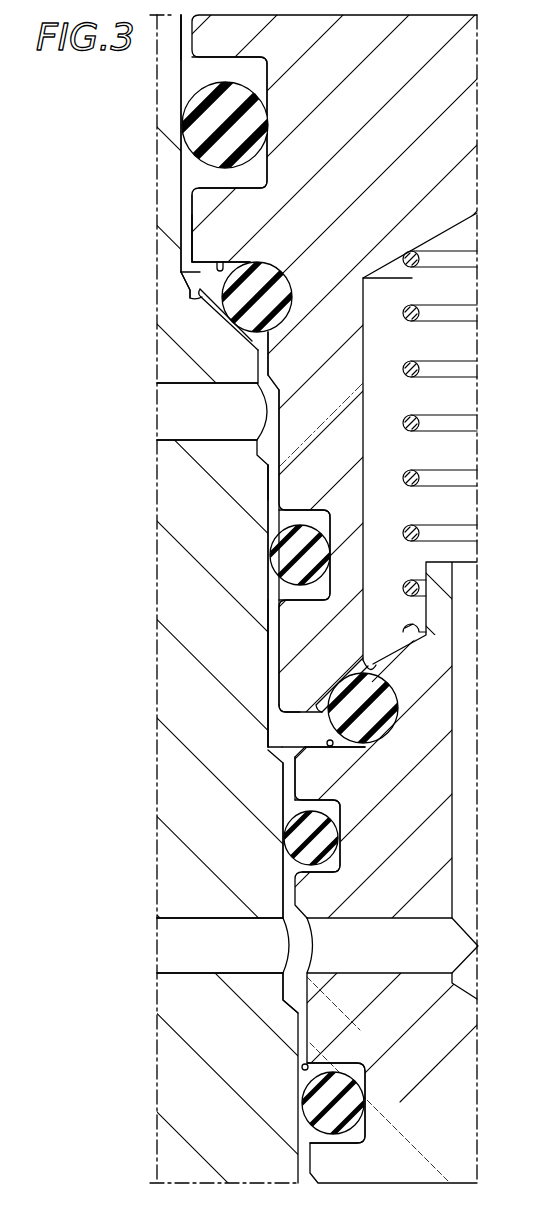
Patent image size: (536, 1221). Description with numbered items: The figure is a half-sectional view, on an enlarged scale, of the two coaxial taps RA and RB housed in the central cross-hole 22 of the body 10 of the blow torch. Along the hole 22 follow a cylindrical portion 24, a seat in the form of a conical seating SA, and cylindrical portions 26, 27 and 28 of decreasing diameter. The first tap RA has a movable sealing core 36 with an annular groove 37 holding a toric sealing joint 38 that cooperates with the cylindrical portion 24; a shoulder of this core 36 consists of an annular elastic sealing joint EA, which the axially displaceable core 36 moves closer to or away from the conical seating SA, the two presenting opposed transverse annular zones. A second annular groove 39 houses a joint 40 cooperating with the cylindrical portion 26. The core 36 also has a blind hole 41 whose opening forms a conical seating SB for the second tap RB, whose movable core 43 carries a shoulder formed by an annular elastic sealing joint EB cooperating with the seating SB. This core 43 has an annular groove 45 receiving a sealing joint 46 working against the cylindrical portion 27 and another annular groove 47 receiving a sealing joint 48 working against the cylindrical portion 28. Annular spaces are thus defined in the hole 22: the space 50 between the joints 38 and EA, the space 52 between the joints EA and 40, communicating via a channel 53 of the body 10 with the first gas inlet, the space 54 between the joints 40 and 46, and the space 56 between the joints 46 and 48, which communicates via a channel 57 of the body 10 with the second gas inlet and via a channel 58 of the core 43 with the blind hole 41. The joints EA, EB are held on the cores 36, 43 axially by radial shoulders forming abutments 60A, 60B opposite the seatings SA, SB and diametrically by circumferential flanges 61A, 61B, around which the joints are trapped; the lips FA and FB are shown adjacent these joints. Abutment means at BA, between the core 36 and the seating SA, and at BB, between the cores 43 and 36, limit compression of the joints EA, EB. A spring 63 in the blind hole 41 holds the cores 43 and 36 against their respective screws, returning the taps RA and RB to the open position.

The body 10 is at (176, 582).
The central cross-hole 22 is at (281, 653).
The cylindrical portion 24 is at (182, 153).
The cylindrical portion 26 is at (273, 481).
The cylindrical portion 27 is at (288, 786).
The cylindrical portion 28 is at (304, 1065).
The movable sealing core 36 is at (196, 225).
The annular groove 37 is at (270, 70).
The toric sealing joint 38 is at (257, 115).
The second annular groove 39 is at (331, 527).
The joint 40 is at (317, 547).
The blind hole 41 is at (450, 292).
The movable core 43 is at (302, 894).
The annular groove 45 is at (335, 810).
The sealing joint 46 is at (293, 847).
The annular groove 47 is at (361, 1077).
The sealing joint 48 is at (365, 1136).
The annular space 50 is at (203, 178).
The annular space 52 is at (281, 446).
The channel 53 is at (175, 385).
The annular space 54 is at (275, 632).
The annular space 56 is at (296, 994).
The channel 57 is at (173, 922).
The channel 58 is at (402, 920).
The abutment 60A is at (221, 260).
The abutment 60B is at (331, 746).
The circumferential flange 61A is at (290, 302).
The circumferential flange 61B is at (394, 702).
The spring 63 is at (460, 410).
The first tap RA is at (187, 51).
The abutment means BA is at (200, 273).
The conical seating SA is at (200, 298).
The flange lip FA is at (205, 305).
The annular elastic sealing joint EA is at (276, 286).
The conical seating SB is at (374, 667).
The flange lip FB is at (340, 690).
The abutment means BB is at (283, 718).
The second tap RB is at (300, 746).
The annular elastic sealing joint EB is at (389, 720).